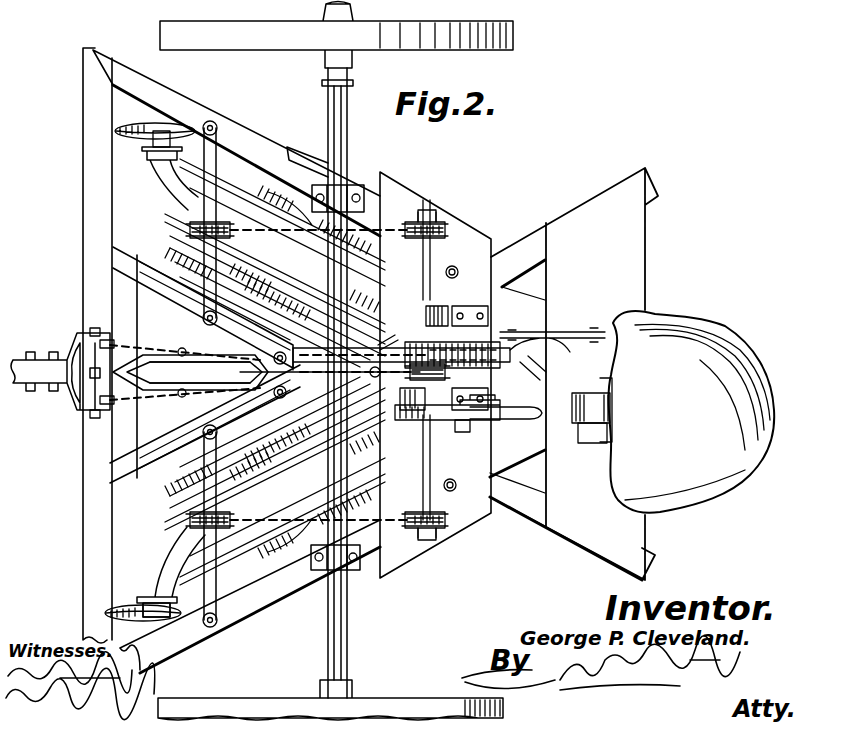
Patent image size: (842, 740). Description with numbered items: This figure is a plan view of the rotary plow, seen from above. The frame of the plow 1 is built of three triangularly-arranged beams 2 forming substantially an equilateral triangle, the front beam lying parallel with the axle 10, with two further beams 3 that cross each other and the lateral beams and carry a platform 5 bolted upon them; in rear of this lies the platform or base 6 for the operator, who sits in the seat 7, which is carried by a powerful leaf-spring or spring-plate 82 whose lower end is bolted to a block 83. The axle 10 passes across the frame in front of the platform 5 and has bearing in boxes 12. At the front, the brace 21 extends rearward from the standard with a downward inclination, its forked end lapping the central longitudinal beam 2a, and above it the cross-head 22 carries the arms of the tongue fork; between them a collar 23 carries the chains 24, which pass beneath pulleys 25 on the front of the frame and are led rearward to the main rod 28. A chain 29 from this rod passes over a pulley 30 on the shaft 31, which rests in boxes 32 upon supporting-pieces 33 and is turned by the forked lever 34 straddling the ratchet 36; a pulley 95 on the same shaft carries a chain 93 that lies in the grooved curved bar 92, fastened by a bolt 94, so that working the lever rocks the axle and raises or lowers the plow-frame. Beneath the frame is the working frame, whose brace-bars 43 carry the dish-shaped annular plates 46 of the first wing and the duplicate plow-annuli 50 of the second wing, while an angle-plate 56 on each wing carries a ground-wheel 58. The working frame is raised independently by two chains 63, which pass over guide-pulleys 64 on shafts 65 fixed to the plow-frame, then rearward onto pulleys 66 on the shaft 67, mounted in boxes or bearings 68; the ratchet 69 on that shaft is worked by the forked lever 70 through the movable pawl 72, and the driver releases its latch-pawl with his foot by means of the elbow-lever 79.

The frame of the plow 1 is at (83, 222).
The beams 2 is at (235, 361).
The beams 3 is at (205, 365).
The platform 5 is at (435, 375).
The platform or base 6 is at (574, 374).
The seat 7 is at (692, 412).
The axle 10 is at (328, 631).
The boxes 12 is at (322, 386).
The brace 21 is at (190, 355).
The cross-head 22 is at (85, 410).
The central longitudinal beam 2a is at (200, 371).
The collar 23 is at (200, 374).
The chains 24 is at (146, 346).
The pulleys 25 is at (112, 340).
The main rod 28 is at (292, 388).
The chain 29 is at (330, 380).
The pulley 30 is at (450, 374).
The shaft 31 is at (444, 399).
The boxes 32 is at (440, 306).
The supporting-pieces 33 is at (468, 306).
The lever 34 is at (584, 329).
The ratchet 36 is at (388, 345).
The brace-bars 43 is at (215, 306).
The annular plate 46 is at (275, 290).
The plow-annuli 50 is at (262, 453).
The angle-plate 56 is at (162, 190).
The ground-wheel 58 is at (150, 377).
The chains 63 is at (393, 530).
The guide-pulleys 64 is at (190, 236).
The shafts 65 is at (204, 172).
The pulleys 66 is at (412, 220).
The shaft 67 is at (432, 244).
The boxes or bearings 68 is at (427, 216).
The ratchet 69 is at (395, 410).
The lever 70 is at (476, 432).
The movable pawl 72 is at (418, 440).
The elbow-lever 79 is at (527, 420).
The leaf-spring or spring-plate 82 is at (592, 410).
The block 83 is at (587, 444).
The curved bar 92 is at (380, 339).
The chain 93 is at (442, 348).
The bolt 94 is at (270, 354).
The pulley 95 is at (524, 369).